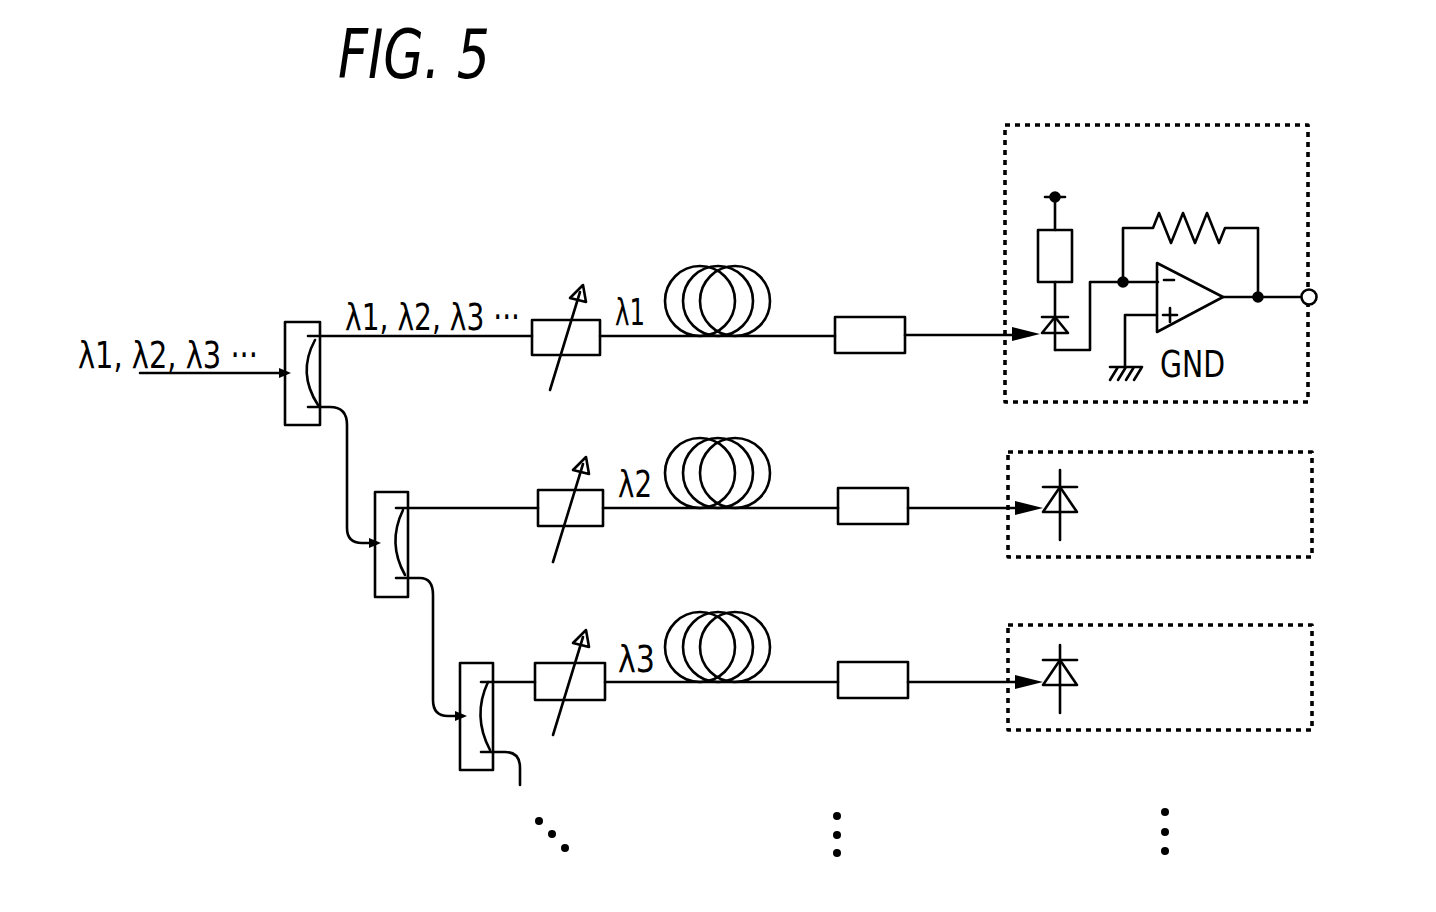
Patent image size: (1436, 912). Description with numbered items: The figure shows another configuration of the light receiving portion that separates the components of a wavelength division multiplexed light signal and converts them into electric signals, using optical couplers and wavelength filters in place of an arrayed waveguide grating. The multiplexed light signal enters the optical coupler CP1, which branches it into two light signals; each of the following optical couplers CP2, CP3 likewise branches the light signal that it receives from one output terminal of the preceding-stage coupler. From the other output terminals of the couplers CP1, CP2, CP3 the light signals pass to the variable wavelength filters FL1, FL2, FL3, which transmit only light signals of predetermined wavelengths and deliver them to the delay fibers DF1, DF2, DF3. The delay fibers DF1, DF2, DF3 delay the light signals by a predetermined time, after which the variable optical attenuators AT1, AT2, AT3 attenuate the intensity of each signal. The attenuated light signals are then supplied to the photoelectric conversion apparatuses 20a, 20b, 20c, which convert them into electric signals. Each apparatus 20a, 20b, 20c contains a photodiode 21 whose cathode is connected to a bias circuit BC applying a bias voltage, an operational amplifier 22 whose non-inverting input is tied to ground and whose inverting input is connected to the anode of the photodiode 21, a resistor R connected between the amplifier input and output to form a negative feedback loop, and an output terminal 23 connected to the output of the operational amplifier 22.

The optical coupler CP1 is at (288, 407).
The optical coupler CP2 is at (378, 578).
The optical coupler CP3 is at (463, 752).
The variable wavelength filter FL1 is at (535, 355).
The variable wavelength filter FL2 is at (540, 527).
The variable wavelength filter FL3 is at (605, 700).
The delay fiber DF1 is at (770, 283).
The delay fiber DF2 is at (770, 456).
The delay fiber DF3 is at (770, 630).
The variable optical attenuator AT1 is at (905, 318).
The variable optical attenuator AT2 is at (908, 491).
The variable optical attenuator AT3 is at (908, 665).
The photoelectric conversion apparatus 20a is at (1312, 373).
The photoelectric conversion apparatus 20b is at (1314, 500).
The photoelectric conversion apparatus 20c is at (1314, 675).
The photodiode 21 is at (1042, 315).
The operational amplifier 22 is at (1205, 315).
The output terminal 23 is at (1317, 297).
The bias circuit BC is at (1038, 250).
The resistor R is at (1193, 212).